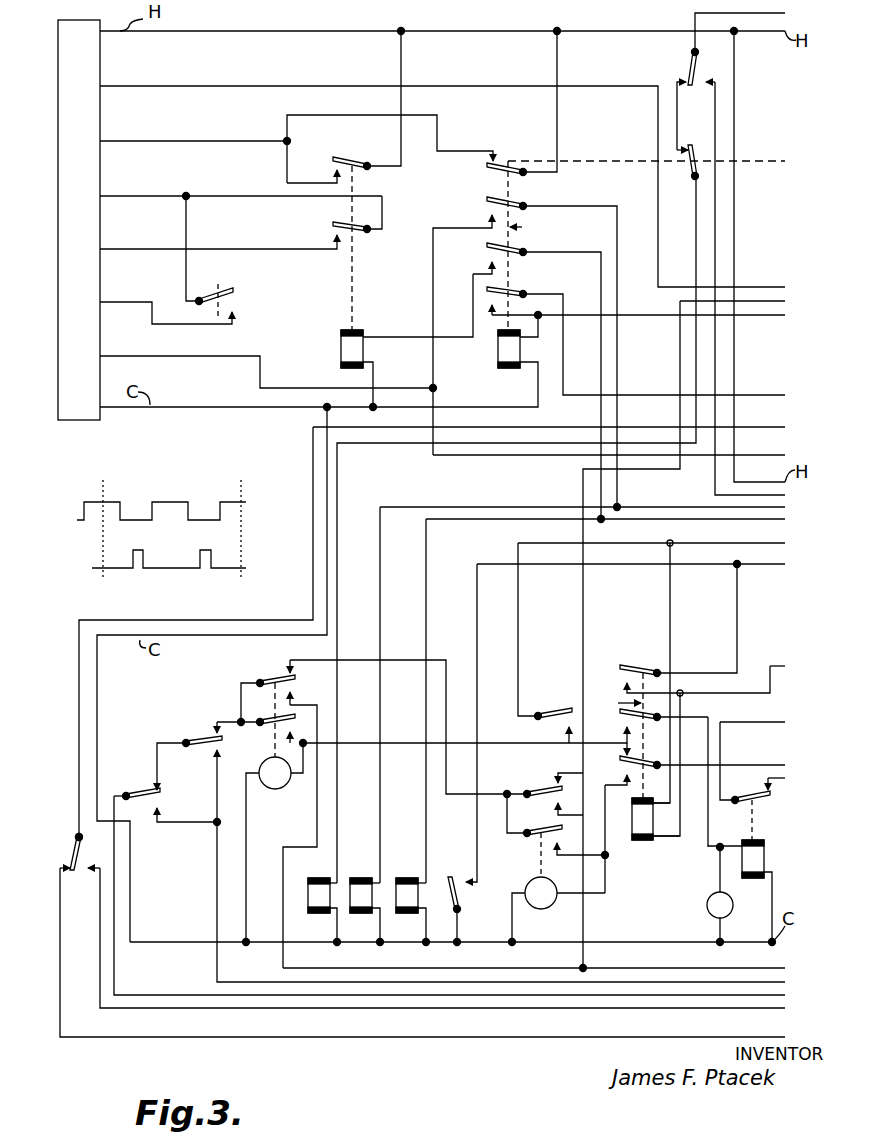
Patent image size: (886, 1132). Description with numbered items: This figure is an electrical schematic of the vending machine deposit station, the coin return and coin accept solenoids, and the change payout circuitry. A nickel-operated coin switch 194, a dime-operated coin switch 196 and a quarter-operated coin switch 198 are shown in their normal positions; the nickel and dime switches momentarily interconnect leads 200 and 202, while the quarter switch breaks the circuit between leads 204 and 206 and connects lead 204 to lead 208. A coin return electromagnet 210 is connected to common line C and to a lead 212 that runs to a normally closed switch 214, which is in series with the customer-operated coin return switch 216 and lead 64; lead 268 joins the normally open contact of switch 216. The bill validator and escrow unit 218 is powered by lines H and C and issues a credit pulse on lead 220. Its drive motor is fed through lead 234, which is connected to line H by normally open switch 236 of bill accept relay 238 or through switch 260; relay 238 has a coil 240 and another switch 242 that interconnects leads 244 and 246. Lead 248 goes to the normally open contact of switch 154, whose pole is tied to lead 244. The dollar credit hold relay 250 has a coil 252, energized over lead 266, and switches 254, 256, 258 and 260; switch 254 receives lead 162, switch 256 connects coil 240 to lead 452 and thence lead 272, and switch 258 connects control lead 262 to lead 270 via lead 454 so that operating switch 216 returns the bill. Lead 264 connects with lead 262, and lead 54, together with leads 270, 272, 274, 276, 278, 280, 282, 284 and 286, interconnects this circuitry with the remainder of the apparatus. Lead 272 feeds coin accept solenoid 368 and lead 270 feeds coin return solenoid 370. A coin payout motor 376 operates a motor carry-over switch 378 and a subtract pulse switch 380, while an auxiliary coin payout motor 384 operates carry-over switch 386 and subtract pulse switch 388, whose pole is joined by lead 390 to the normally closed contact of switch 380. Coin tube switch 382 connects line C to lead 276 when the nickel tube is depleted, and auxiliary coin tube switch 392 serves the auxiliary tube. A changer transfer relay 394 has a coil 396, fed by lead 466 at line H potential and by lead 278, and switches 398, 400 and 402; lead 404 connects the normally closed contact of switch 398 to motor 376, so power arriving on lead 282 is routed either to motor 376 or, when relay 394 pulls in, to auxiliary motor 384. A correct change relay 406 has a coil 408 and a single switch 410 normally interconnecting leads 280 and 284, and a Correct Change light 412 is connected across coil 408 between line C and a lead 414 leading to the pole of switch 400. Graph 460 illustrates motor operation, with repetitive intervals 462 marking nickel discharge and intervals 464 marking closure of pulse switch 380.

The bill validator and escrow unit 218 is at (58, 192).
The lead 64 is at (785, 13).
The customer-operated coin return switch 216 is at (689, 68).
The lead 268 is at (715, 100).
The normally closed switch 214 is at (698, 158).
The lead 212 is at (696, 228).
The credit pulse lead 220 is at (118, 86).
The lead 234 is at (112, 141).
The normally open switch 236 is at (340, 160).
The lead 244 is at (114, 196).
The normally open switch 242 is at (332, 226).
The lead 246 is at (114, 249).
The lead 248 is at (114, 302).
The switch 154 is at (224, 292).
The bill accept relay 238 is at (356, 280).
The coil 240 is at (340, 352).
The control lead 262 is at (130, 348).
The switch 260 is at (500, 160).
The dollar credit hold relay 250 is at (524, 226).
The switch 258 is at (487, 203).
The lead 454 is at (576, 206).
The switch 256 is at (487, 249).
The lead 452 is at (601, 356).
The switch 254 is at (510, 290).
The lead 162 is at (785, 395).
The lead 266 is at (785, 315).
The coil 252 is at (500, 368).
The lead 54 is at (785, 301).
The lead 204 is at (785, 427).
The lead 264 is at (785, 455).
The lead 270 is at (785, 507).
The lead 272 is at (785, 519).
The lead 274 is at (785, 543).
The lead 276 is at (785, 564).
The lead 466 is at (670, 600).
The switch 402 is at (624, 666).
The changer transfer relay 394 is at (618, 703).
The lead 278 is at (785, 666).
The switch 400 is at (620, 715).
The lead 414 is at (690, 789).
The lead 404 is at (394, 743).
The switch 398 is at (620, 758).
The lead 282 is at (785, 765).
The lead 280 is at (785, 722).
The switch 410 is at (752, 806).
The lead 284 is at (785, 778).
The correct change relay 406 is at (756, 826).
The coil 408 is at (764, 862).
The Correct Change light 412 is at (707, 906).
The coil 396 is at (647, 770).
The auxiliary coin tube switch 392 is at (552, 712).
The subtract pulse switch 388 is at (545, 790).
The motor carry-over switch 386 is at (536, 838).
The lead 390 is at (392, 660).
The auxiliary coin payout motor 384 is at (552, 909).
The coin tube switch 382 is at (456, 891).
The subtract pulse switch 380 is at (280, 679).
The motor carry-over switch 378 is at (258, 726).
The coin payout motor 376 is at (268, 792).
The dime-operated coin switch 196 is at (194, 741).
The nickel-operated coin switch 194 is at (144, 791).
The quarter-operated coin switch 198 is at (72, 856).
The lead 206 is at (60, 938).
The lead 208 is at (785, 1008).
The lead 200 is at (217, 872).
The lead 202 is at (114, 922).
The lead 286 is at (785, 968).
The coin return electromagnet 210 is at (309, 878).
The coin return solenoid 370 is at (358, 876).
The coin accept solenoid 368 is at (405, 876).
The graph 460 is at (161, 519).
The repetitive intervals 462 is at (78, 516).
The intervals 464 is at (187, 568).